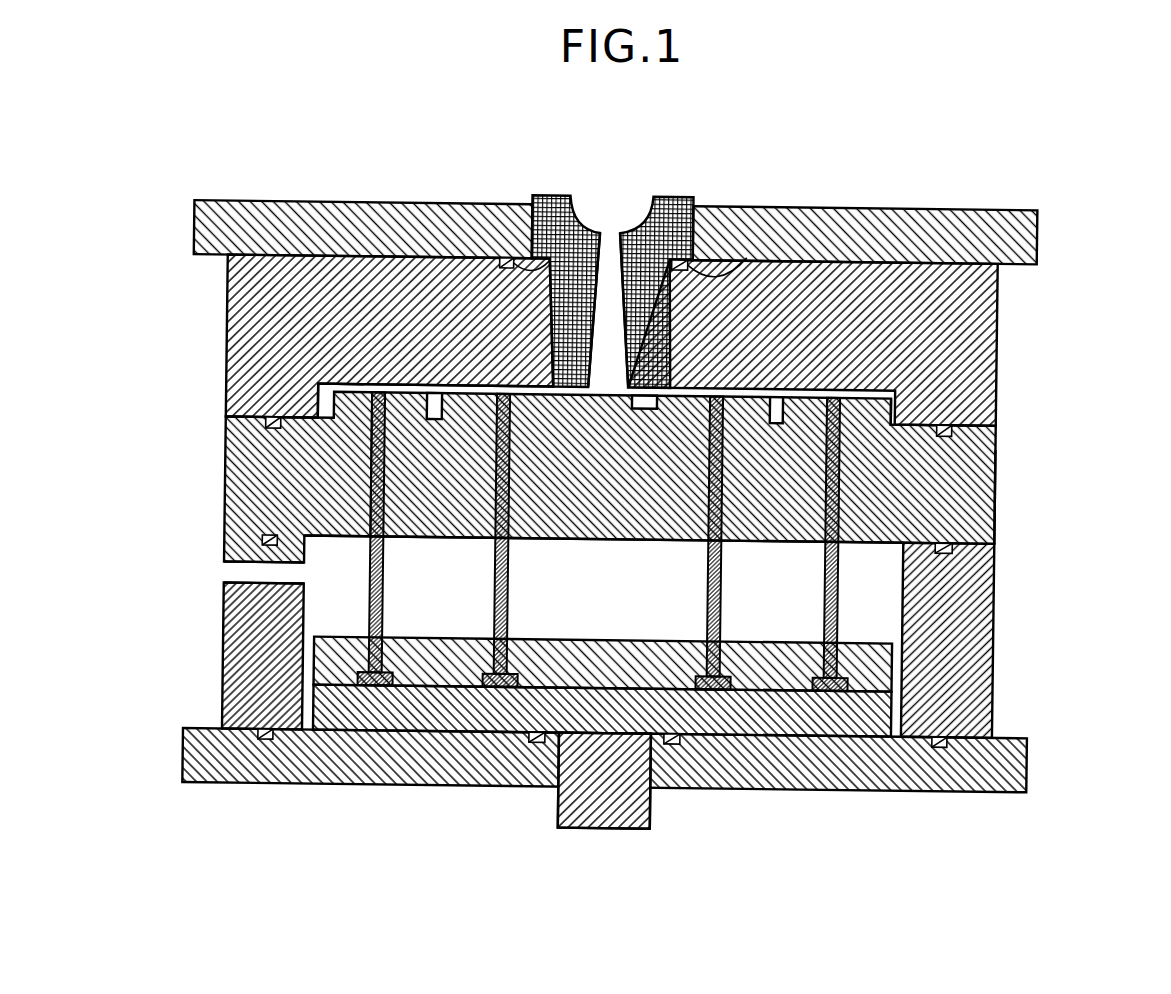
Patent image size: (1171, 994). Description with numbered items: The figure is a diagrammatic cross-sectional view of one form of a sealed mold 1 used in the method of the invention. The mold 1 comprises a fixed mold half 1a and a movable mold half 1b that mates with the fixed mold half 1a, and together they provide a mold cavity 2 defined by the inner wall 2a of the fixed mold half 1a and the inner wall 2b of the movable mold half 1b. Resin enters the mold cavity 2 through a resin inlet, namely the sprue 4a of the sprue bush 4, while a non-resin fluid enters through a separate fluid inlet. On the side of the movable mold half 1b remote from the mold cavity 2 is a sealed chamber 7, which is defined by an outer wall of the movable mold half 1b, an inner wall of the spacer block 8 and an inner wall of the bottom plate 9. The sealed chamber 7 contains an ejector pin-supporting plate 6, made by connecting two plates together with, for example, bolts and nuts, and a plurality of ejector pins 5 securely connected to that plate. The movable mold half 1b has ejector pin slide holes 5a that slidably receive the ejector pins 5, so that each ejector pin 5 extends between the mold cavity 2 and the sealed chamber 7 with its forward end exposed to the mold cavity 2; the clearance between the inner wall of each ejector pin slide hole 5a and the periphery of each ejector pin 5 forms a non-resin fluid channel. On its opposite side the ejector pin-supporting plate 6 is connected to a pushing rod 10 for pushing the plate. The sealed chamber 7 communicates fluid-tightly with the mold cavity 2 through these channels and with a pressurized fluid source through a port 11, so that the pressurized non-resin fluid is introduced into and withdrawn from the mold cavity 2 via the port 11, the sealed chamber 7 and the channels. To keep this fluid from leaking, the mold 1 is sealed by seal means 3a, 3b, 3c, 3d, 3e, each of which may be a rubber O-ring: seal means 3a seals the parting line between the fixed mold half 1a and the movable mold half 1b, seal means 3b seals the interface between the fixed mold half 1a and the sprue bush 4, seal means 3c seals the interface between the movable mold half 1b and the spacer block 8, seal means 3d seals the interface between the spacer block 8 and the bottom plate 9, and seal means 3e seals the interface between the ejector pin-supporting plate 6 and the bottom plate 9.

The mold 1 is at (1093, 375).
The fixed mold half 1a is at (1000, 391).
The movable mold half 1b is at (1000, 470).
The mold cavity 2 is at (742, 388).
The inner wall of fixed mold half 2a is at (353, 385).
The inner wall of movable mold half 2b is at (462, 383).
The seal means 3a is at (272, 420).
The seal means 3b is at (497, 250).
The seal means 3c is at (270, 537).
The seal means 3d is at (262, 738).
The seal means 3e is at (535, 745).
The sprue bush 4 is at (670, 197).
The sprue 4a is at (608, 327).
The ejector pin 5 is at (368, 580).
The ejector pin slide hole 5a is at (368, 450).
The ejector pin-supporting plate 6 is at (880, 712).
The sealed chamber 7 is at (452, 590).
The spacer block 8 is at (222, 667).
The bottom plate 9 is at (335, 783).
The pushing rod 10 is at (608, 812).
The port 11 is at (240, 572).